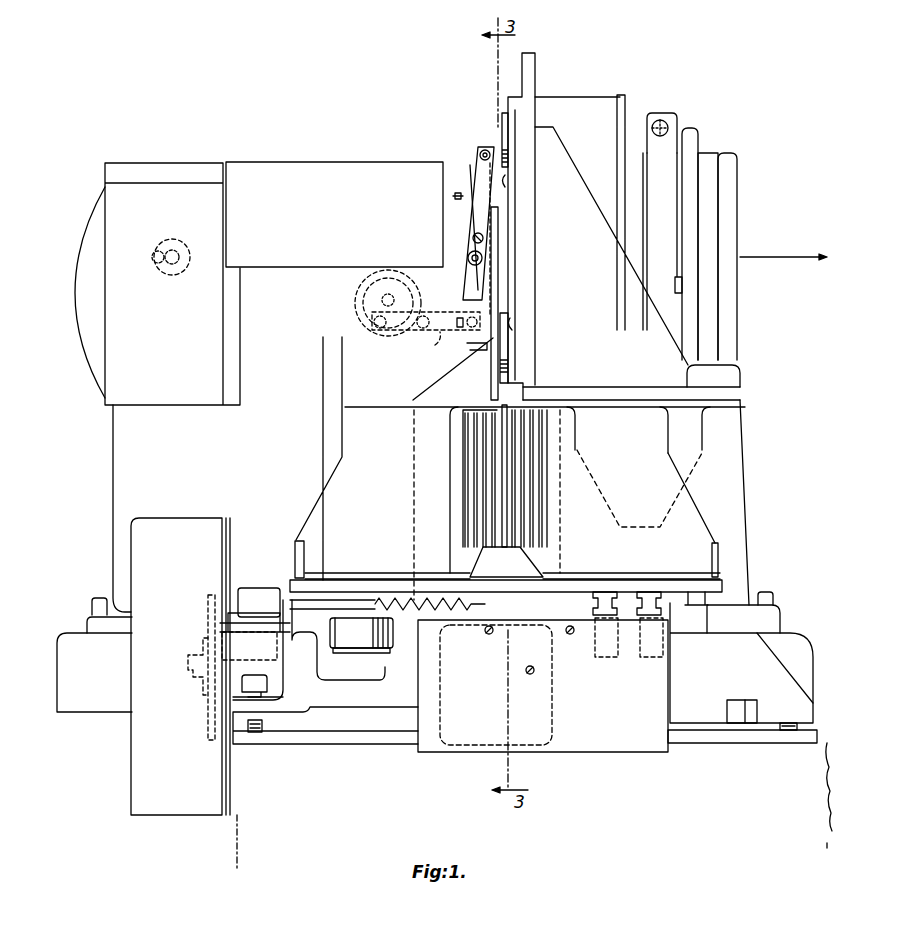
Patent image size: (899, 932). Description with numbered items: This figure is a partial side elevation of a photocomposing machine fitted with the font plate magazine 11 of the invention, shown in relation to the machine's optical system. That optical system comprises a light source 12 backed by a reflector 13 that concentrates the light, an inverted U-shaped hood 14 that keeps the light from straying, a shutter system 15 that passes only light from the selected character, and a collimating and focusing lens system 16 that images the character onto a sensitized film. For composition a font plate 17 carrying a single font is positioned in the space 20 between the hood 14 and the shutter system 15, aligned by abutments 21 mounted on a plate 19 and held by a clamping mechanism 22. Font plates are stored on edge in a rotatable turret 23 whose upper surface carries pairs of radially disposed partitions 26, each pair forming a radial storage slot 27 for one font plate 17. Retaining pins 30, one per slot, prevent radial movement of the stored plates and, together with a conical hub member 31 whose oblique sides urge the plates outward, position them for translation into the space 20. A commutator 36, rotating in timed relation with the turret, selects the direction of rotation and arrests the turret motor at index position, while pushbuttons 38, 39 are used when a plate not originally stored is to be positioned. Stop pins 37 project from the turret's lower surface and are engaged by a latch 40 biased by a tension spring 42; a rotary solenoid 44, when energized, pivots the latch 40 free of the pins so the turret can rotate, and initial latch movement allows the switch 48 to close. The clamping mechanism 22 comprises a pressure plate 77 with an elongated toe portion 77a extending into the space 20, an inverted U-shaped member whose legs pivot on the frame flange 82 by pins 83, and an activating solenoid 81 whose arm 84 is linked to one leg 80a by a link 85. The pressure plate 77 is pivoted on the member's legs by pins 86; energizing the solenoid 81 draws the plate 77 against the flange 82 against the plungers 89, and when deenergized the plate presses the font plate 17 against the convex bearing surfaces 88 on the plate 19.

The font plate magazine 11 is at (315, 490).
The light source 12 is at (173, 242).
The reflector 13 is at (93, 288).
The inverted U-shaped hood 14 is at (318, 172).
The shutter system 15 is at (592, 108).
The collimating and focusing lens system 16 is at (703, 136).
The font plate 17 is at (507, 488).
The plate 19 is at (518, 240).
The space 20 is at (500, 279).
The abutments 21 is at (503, 137).
The clamping mechanism 22 is at (460, 216).
The turret 23 is at (717, 585).
The partitions 26 is at (470, 407).
The radial storage slot 27 is at (503, 440).
The retaining pins 30 is at (304, 556).
The conical hub member 31 is at (518, 560).
The commutator 36 is at (207, 612).
The stop pins 37 is at (715, 592).
The pushbutton 38 is at (603, 583).
The pushbutton 39 is at (645, 583).
The latch 40 is at (313, 607).
The tension spring 42 is at (395, 597).
The rotary solenoid 44 is at (357, 638).
The switch 48 is at (258, 588).
The pressure plate 77 is at (495, 200).
The elongated toe portion 77a is at (462, 360).
The leg 80a is at (480, 182).
The activating solenoid 81 is at (372, 292).
The flange 82 is at (470, 160).
The pins 83 is at (470, 238).
The solenoid arm 84 is at (372, 316).
The link 85 is at (434, 340).
The pins 86 is at (470, 260).
The convex bearing surfaces 88 is at (507, 180).
The plungers 89 is at (452, 198).